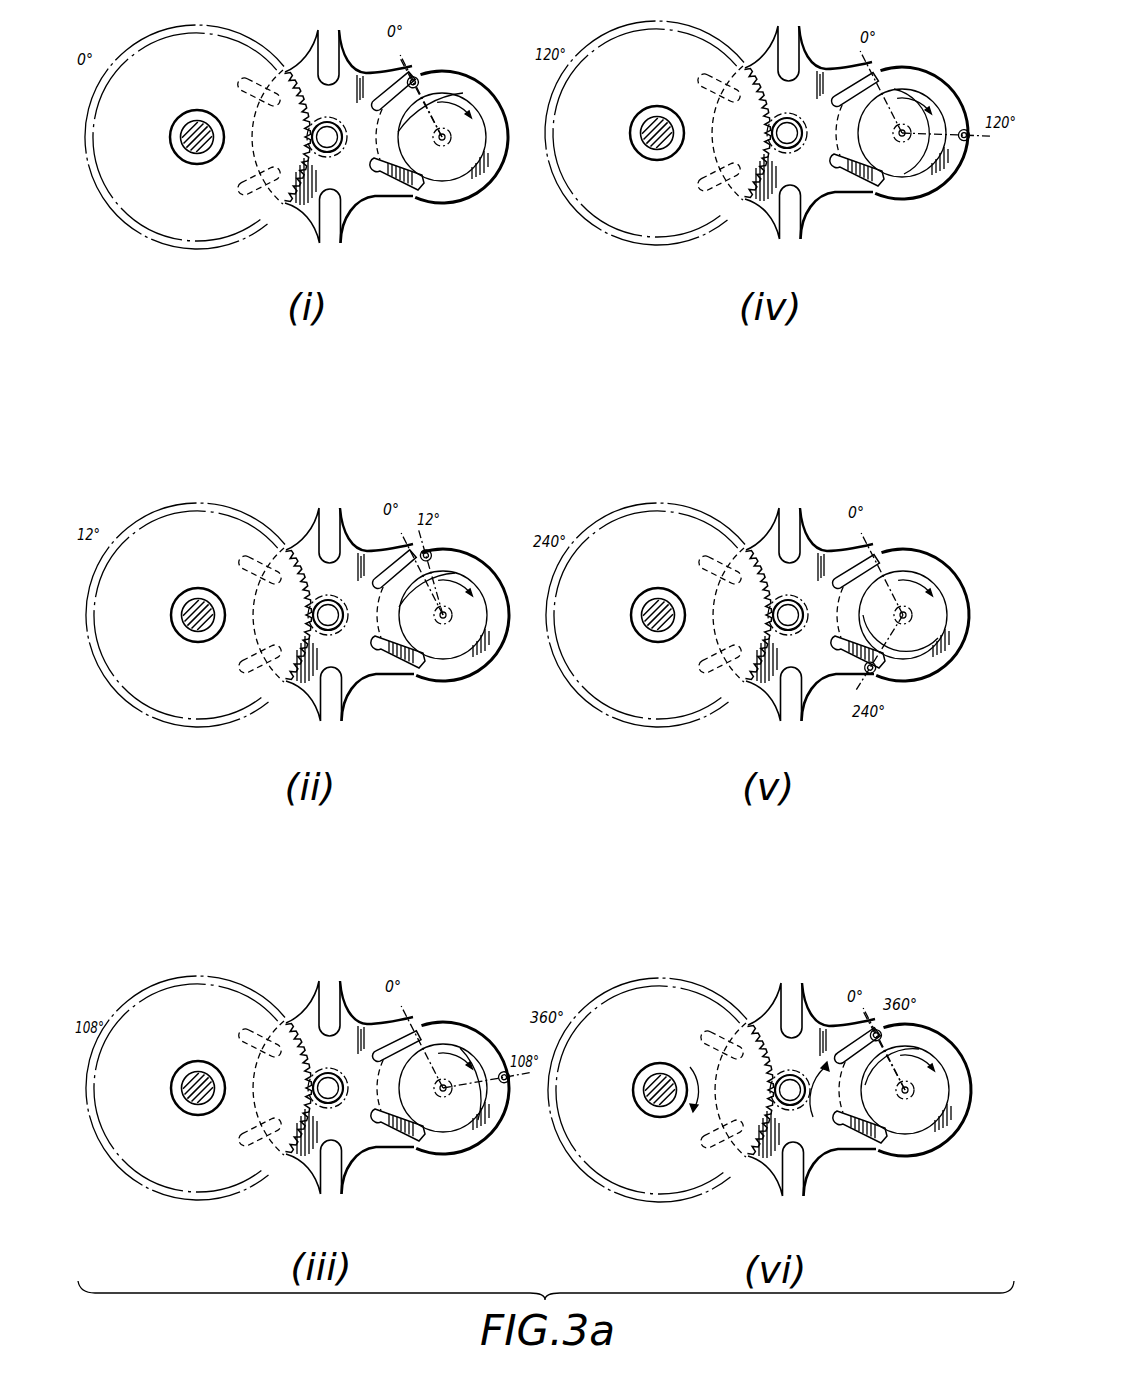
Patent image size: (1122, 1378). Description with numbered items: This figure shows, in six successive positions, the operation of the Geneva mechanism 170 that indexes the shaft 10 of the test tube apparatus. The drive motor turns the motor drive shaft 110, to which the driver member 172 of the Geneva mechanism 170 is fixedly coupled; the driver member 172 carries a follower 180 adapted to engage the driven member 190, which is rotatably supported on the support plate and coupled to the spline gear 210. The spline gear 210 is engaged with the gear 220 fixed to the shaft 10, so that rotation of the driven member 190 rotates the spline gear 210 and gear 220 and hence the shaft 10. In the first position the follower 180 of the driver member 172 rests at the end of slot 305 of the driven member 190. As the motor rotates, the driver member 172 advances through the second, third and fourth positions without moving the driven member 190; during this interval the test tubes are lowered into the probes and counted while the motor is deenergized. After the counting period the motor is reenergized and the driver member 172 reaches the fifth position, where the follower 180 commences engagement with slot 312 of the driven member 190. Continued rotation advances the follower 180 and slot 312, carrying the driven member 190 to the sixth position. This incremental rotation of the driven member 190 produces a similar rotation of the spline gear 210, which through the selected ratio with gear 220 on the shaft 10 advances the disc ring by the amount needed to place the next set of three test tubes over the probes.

The shaft 10 is at (183, 134).
The motor drive shaft 110 is at (440, 145).
The Geneva mechanism 170 is at (369, 226).
The driver member 172 is at (468, 158).
The follower 180 is at (418, 76).
The driven member 190 is at (350, 72).
The spline gear 210 is at (312, 120).
The gear 220 is at (266, 212).
The slot 305 is at (418, 86).
The slot 312 is at (384, 179).